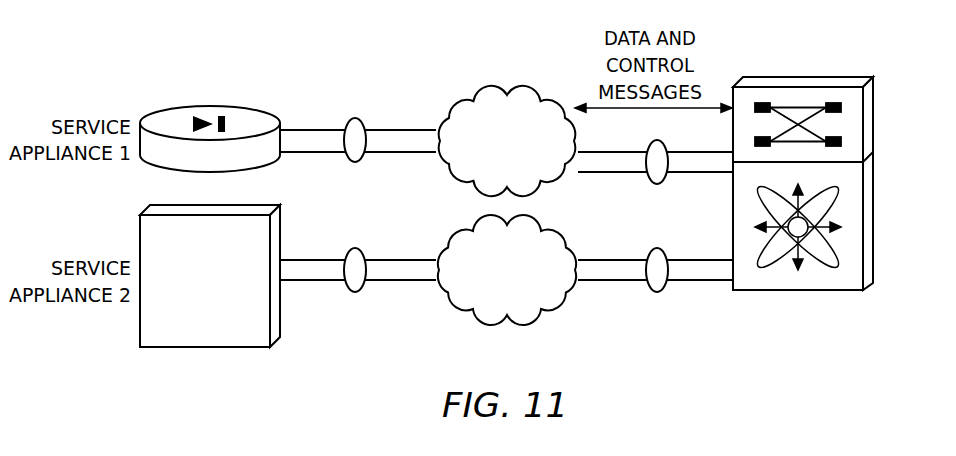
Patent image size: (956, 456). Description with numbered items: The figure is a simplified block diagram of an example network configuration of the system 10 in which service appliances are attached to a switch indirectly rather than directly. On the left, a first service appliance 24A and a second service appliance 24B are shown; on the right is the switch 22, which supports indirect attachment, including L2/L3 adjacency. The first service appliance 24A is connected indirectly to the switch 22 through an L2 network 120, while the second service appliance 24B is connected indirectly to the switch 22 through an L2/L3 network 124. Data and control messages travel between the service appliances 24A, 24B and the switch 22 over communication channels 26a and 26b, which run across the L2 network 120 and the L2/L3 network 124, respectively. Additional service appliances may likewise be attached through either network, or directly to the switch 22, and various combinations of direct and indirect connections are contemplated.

The system 10 is at (548, 56).
The switch 22 is at (808, 291).
The service appliance 24A is at (210, 106).
The service appliance 24B is at (205, 348).
The communication channel 26a is at (656, 185).
The communication channel 26b is at (656, 293).
The L2 network 120 is at (471, 90).
The L2/L3 network 124 is at (470, 322).